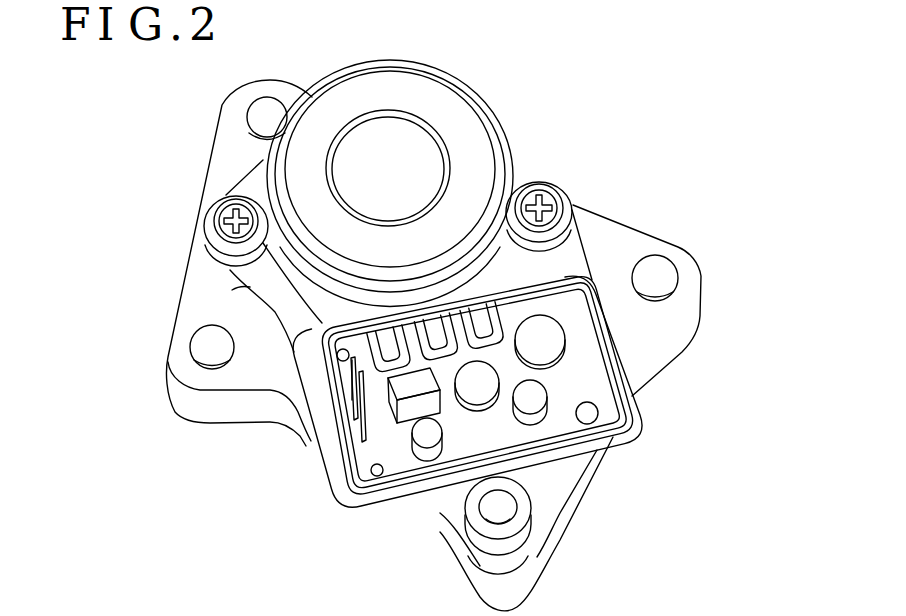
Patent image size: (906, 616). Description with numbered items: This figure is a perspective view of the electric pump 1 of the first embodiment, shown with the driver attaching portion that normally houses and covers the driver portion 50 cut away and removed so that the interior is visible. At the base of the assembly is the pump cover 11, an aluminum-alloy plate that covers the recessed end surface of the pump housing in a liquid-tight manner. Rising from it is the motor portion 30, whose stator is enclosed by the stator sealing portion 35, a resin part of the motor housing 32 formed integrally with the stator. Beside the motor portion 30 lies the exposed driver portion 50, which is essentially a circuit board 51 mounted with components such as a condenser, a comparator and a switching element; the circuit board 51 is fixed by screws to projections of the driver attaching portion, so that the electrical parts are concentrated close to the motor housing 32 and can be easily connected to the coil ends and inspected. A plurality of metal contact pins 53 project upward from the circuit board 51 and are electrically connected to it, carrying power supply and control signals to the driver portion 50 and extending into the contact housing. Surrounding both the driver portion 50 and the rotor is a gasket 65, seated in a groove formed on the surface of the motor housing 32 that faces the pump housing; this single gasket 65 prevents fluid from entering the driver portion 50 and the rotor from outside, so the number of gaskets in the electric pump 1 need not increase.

The electric pump 1 is at (155, 157).
The pump cover 11 is at (660, 327).
The motor portion 30 is at (493, 98).
The motor housing 32 is at (474, 168).
The stator sealing portion 35 is at (483, 147).
The driver portion 50 is at (574, 450).
The circuit board 51 is at (593, 383).
The contact pins 53 is at (350, 397).
The gasket 65 is at (360, 498).